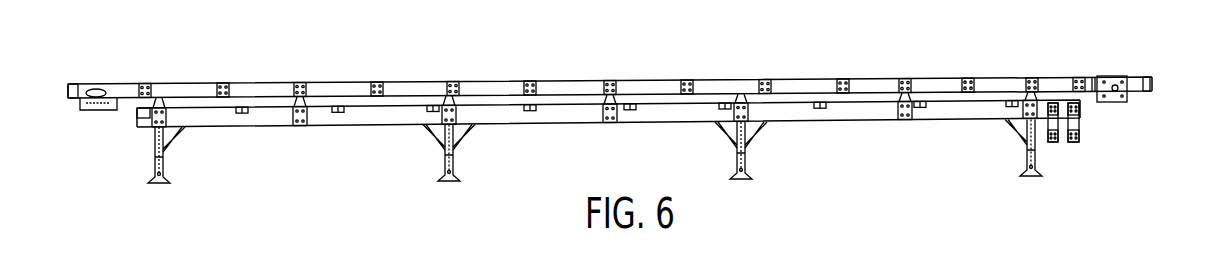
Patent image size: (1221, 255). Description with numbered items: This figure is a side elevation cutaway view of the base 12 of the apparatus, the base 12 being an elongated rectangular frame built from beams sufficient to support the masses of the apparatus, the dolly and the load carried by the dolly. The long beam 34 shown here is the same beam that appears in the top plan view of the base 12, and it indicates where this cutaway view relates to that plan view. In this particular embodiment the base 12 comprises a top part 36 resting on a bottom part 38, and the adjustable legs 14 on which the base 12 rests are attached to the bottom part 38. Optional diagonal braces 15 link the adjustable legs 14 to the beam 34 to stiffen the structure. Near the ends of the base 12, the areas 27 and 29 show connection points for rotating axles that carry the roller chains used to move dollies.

The base 12 is at (871, 44).
The adjustable legs 14 is at (167, 166).
The diagonal braces 15 is at (176, 139).
The connection point for rotating axle 27 is at (96, 91).
The connection point for rotating axle 29 is at (1117, 85).
The beam 34 is at (268, 89).
The top part 36 is at (1153, 60).
The bottom part 38 is at (860, 123).